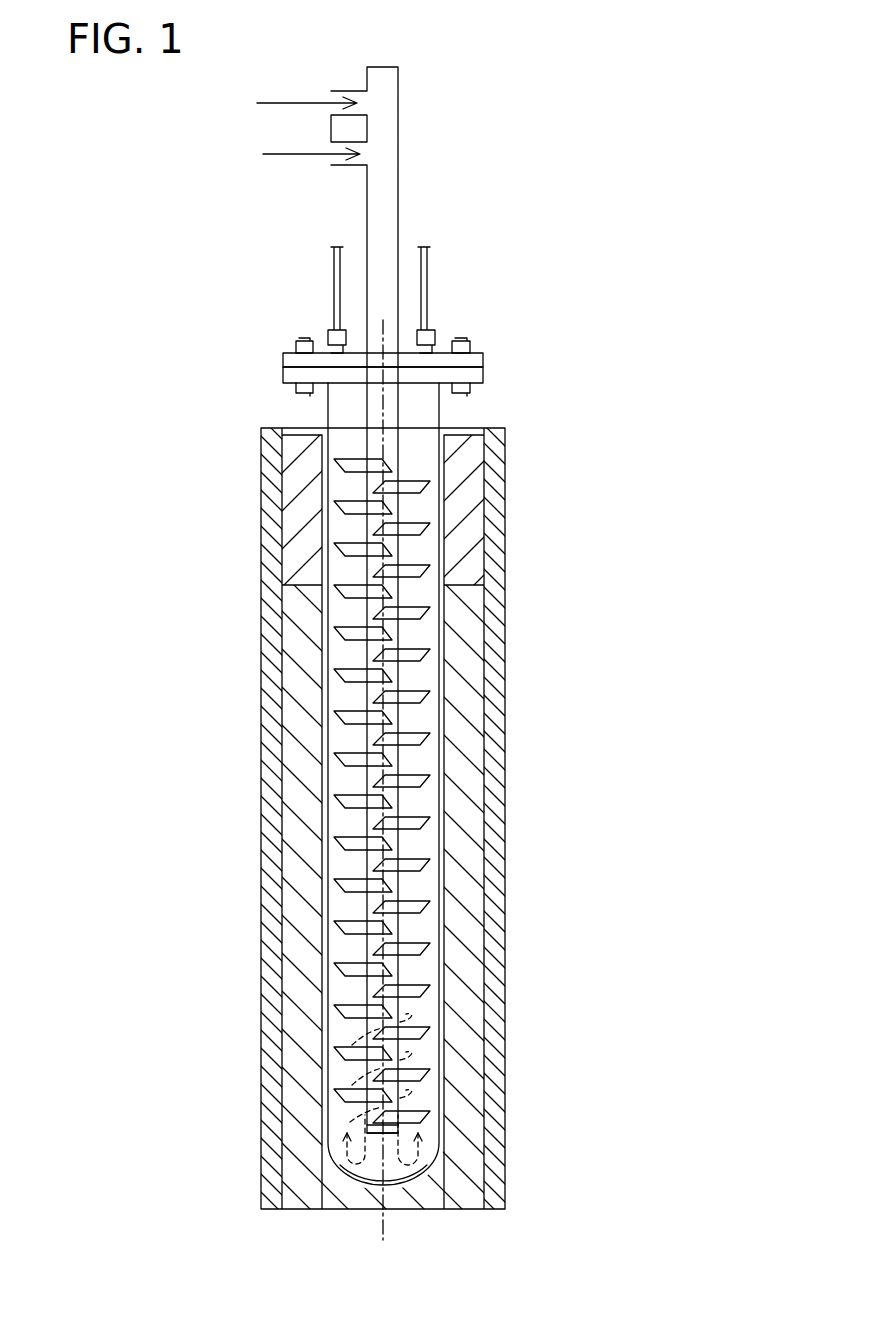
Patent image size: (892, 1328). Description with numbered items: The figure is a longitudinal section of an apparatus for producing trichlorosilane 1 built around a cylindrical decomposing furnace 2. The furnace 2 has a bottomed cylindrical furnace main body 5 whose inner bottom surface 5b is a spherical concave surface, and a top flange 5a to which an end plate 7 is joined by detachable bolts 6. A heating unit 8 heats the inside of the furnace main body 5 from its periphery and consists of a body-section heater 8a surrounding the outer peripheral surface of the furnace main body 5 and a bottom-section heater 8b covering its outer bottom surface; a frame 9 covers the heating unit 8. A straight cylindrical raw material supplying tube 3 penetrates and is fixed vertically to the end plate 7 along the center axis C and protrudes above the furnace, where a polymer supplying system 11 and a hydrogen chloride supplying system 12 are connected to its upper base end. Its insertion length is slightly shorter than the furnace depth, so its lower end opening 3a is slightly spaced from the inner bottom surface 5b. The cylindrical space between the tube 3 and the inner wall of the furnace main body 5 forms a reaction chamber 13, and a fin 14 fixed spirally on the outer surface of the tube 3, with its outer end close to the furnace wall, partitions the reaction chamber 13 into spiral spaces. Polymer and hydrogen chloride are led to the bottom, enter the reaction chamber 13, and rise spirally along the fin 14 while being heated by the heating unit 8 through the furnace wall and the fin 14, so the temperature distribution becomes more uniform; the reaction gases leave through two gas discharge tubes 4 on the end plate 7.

The apparatus for producing trichlorosilane 1 is at (624, 309).
The decomposing furnace 2 is at (527, 491).
The raw material supplying tube 3 is at (400, 428).
The lower end opening 3a is at (382, 1134).
The gas discharge tube 4 is at (333, 273).
The furnace main body 5 is at (444, 672).
The top flange 5a is at (283, 373).
The inner bottom surface 5b is at (353, 1176).
The bolts 6 is at (302, 339).
The end plate 7 is at (483, 358).
The heating unit 8 is at (376, 780).
The body-section heater 8a is at (302, 655).
The bottom-section heater 8b is at (422, 1186).
The frame 9 is at (495, 897).
The polymer supplying system 11 is at (283, 158).
The hydrogen chloride supplying system 12 is at (281, 103).
The reaction chamber 13 is at (427, 793).
The fin 14 is at (347, 835).
The center axis C is at (383, 410).